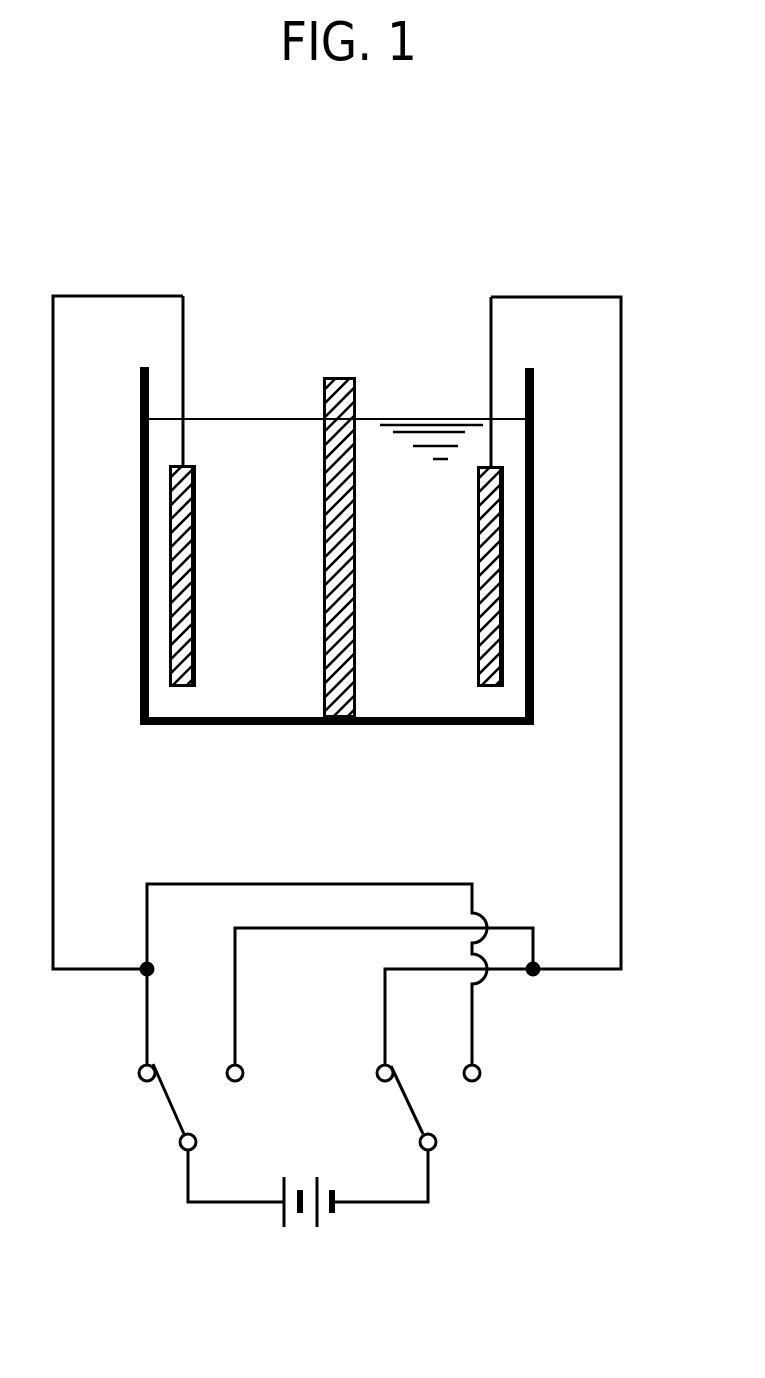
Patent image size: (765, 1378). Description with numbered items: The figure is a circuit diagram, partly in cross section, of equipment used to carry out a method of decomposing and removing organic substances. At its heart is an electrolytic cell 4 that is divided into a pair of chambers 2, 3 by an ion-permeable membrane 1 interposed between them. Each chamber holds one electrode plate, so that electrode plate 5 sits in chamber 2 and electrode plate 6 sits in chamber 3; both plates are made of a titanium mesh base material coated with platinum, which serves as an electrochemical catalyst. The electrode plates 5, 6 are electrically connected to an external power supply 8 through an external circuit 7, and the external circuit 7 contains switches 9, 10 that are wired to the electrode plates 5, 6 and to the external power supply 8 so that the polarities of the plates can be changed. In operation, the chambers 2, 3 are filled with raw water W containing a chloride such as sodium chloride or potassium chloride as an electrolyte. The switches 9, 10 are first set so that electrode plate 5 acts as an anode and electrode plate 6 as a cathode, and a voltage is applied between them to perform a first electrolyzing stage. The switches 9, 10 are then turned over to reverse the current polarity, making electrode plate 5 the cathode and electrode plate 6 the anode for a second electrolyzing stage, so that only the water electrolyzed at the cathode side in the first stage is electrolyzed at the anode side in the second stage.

The ion-permeable membrane 1 is at (356, 575).
The chamber 2 is at (206, 723).
The chamber 3 is at (479, 724).
The electrolytic cell 4 is at (416, 282).
The electrode plate 5 is at (169, 557).
The electrode plate 6 is at (503, 570).
The external circuit 7 is at (621, 680).
The external power supply 8 is at (331, 1235).
The switch 9 is at (170, 1104).
The switch 10 is at (415, 1114).
The raw water W is at (398, 442).